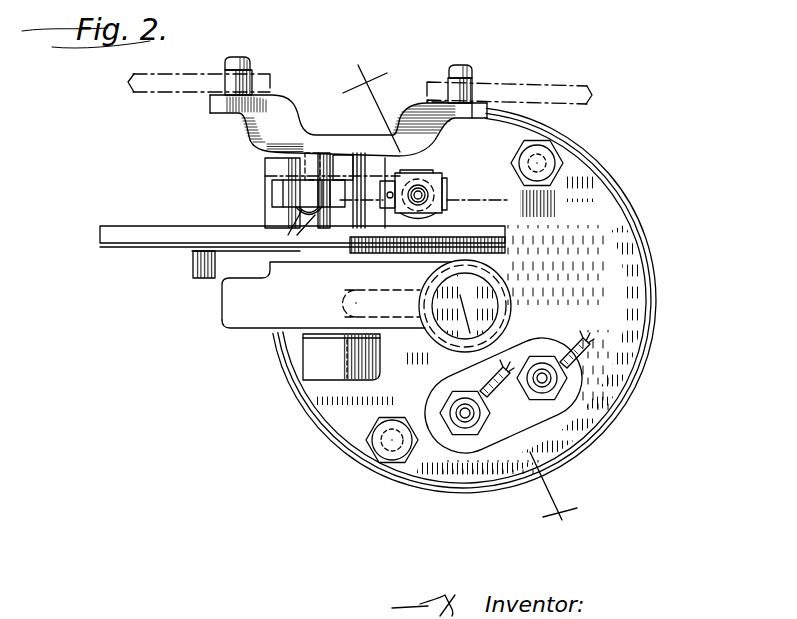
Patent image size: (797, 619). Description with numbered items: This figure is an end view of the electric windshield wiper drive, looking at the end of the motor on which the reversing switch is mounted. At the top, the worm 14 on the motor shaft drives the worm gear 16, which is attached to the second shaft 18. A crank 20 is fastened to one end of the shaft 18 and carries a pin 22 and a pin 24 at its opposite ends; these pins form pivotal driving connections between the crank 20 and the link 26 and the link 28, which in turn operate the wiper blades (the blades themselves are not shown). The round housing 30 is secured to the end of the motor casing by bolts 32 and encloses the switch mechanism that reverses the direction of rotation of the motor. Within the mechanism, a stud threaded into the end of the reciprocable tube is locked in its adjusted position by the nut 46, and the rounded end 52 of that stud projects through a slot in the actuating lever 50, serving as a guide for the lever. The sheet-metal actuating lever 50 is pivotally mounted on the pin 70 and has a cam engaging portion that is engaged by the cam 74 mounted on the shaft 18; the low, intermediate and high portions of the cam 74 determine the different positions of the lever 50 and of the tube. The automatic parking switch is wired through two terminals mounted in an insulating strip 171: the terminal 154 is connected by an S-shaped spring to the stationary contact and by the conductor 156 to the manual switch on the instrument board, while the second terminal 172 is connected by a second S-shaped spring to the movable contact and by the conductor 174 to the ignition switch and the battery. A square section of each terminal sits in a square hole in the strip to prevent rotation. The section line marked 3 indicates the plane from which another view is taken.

The worm 14 is at (512, 303).
The worm gear 16 is at (250, 333).
The second shaft 18 is at (347, 131).
The crank 20 is at (287, 110).
The pin 22 is at (240, 58).
The pin 24 is at (459, 65).
The link 26 is at (170, 87).
The link 28 is at (568, 88).
The housing 30 is at (637, 263).
The bolts 32 is at (540, 166).
The nut 46 is at (433, 170).
The actuating lever 50 is at (267, 178).
The rounded end of stud 52 is at (427, 198).
The pin 70 is at (262, 160).
The cam 74 is at (272, 184).
The terminal 154 is at (467, 430).
The conductor 156 is at (452, 384).
The insulating strip 171 is at (553, 418).
The second terminal 172 is at (553, 388).
The conductor 174 is at (580, 353).
The section line 3 is at (464, 296).